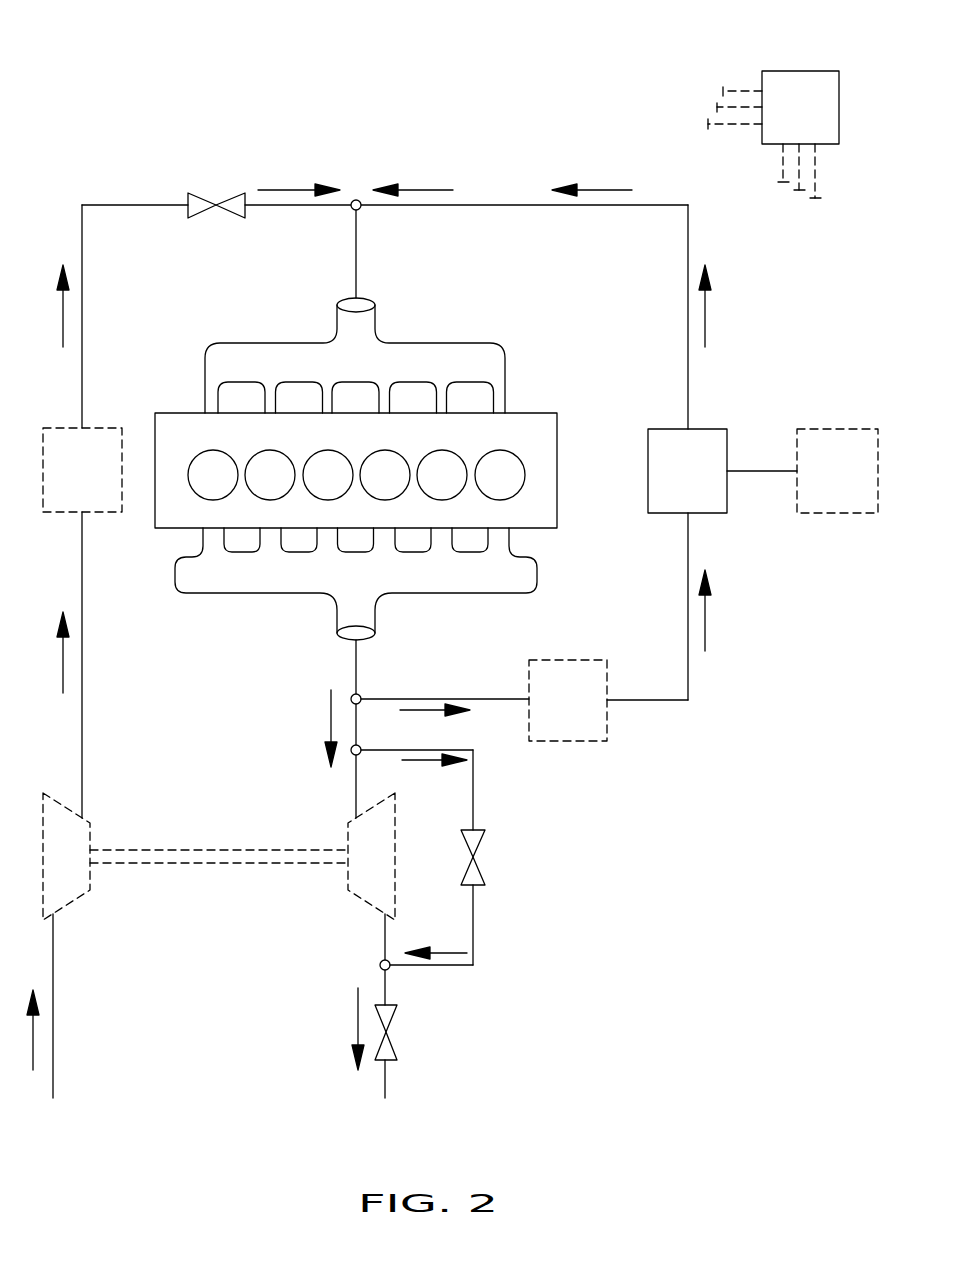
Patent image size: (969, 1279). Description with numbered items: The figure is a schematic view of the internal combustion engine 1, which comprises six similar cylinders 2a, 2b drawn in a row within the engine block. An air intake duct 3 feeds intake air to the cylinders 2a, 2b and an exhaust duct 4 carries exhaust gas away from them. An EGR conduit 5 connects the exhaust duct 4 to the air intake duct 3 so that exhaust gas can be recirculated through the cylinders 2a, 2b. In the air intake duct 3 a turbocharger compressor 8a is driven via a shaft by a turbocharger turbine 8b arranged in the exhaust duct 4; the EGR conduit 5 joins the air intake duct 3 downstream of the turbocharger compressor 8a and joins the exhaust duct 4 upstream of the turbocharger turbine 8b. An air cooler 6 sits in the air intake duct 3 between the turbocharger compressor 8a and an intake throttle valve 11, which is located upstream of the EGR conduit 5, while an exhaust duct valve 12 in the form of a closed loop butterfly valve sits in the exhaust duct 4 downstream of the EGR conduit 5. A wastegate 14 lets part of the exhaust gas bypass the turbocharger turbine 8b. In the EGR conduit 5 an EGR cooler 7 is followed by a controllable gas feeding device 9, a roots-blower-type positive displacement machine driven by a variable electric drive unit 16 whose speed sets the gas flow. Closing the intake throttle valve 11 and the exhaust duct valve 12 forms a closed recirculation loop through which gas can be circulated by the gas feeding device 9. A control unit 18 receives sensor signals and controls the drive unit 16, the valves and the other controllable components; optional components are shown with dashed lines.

The internal combustion engine 1 is at (200, 85).
The cylinder 2a is at (212, 474).
The cylinder 2b is at (269, 474).
The air intake duct 3 is at (452, 343).
The exhaust duct 4 is at (258, 593).
The EGR conduit 5 is at (500, 205).
The air cooler 6 is at (62, 428).
The EGR cooler 7 is at (572, 741).
The turbocharger compressor 8a is at (65, 905).
The turbocharger turbine 8b is at (370, 905).
The gas feeding device 9 is at (712, 429).
The intake throttle valve 11 is at (212, 193).
The exhaust duct valve 12 is at (395, 1020).
The wastegate 14 is at (480, 868).
The drive unit 16 is at (843, 429).
The control unit 18 is at (805, 71).